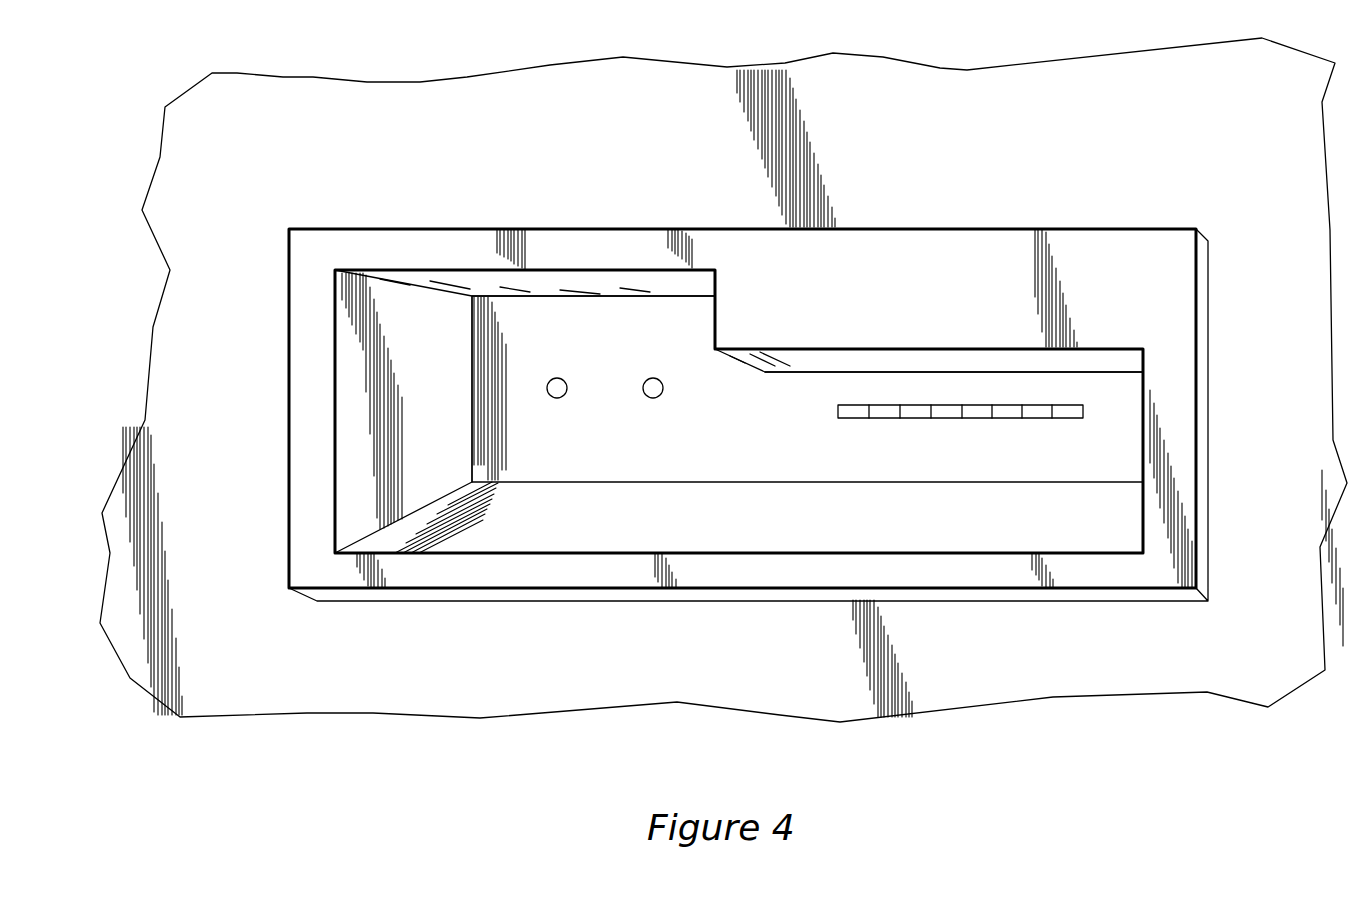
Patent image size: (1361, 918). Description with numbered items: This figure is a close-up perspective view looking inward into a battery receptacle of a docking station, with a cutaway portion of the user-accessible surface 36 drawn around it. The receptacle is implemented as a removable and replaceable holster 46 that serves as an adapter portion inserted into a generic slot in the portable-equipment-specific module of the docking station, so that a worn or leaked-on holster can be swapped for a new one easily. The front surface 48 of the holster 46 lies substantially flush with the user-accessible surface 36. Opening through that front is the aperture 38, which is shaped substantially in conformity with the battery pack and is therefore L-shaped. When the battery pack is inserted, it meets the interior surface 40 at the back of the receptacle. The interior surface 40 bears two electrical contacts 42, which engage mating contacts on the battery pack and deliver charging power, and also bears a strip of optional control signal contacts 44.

The user-accessible surface 36 is at (1152, 146).
The aperture 38 is at (400, 270).
The interior surface 40 is at (590, 325).
The electrical contacts 42 is at (557, 398).
The control signal contacts 44 is at (948, 418).
The holster 46 is at (922, 304).
The front surface 48 is at (1210, 340).